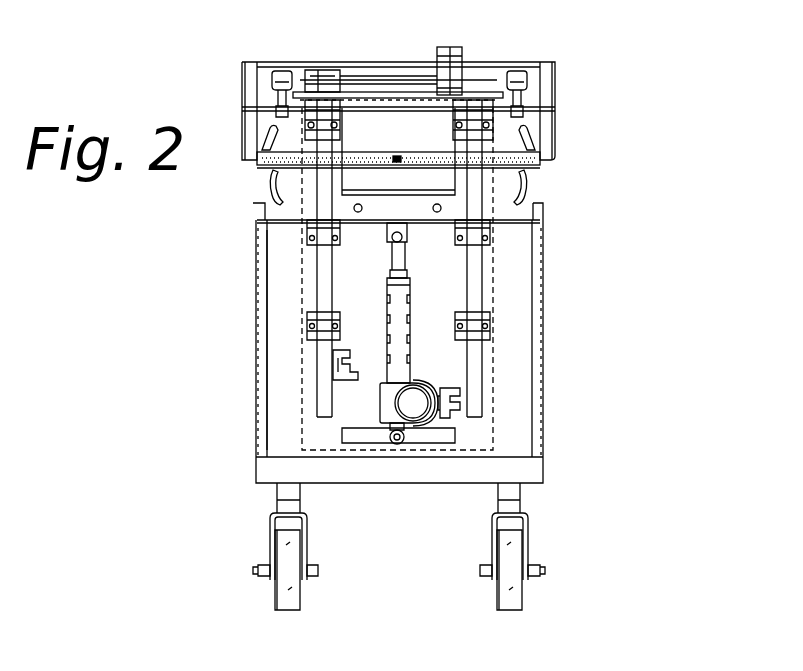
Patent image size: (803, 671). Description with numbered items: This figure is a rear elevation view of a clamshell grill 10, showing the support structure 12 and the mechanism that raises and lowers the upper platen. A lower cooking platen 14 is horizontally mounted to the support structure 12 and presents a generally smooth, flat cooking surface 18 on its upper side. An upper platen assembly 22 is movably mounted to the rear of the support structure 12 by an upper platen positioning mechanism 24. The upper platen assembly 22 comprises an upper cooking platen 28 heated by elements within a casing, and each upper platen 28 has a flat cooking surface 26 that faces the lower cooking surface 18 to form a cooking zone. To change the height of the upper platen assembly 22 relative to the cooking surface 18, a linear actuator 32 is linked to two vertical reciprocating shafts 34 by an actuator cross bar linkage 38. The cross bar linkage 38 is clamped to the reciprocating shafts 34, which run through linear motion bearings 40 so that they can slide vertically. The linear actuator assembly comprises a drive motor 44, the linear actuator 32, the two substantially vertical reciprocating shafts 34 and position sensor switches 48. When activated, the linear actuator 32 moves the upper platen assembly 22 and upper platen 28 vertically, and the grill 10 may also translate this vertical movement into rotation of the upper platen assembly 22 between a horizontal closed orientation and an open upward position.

The clamshell grill 10 is at (608, 49).
The support structure 12 is at (573, 230).
The lower cooking platen 14 is at (540, 163).
The cooking surface 18 is at (265, 148).
The upper platen assembly 22 is at (228, 85).
The upper platen positioning mechanism 24 is at (280, 316).
The cooking surface 26 is at (372, 138).
The upper cooking platen 28 is at (540, 116).
The linear actuator 32 is at (400, 295).
The vertical reciprocating shafts 34 is at (320, 272).
The actuator cross bar linkage 38 is at (540, 183).
The linear motion bearings 40 is at (305, 342).
The drive motor 44 is at (393, 406).
The position sensor switches 48 is at (350, 382).